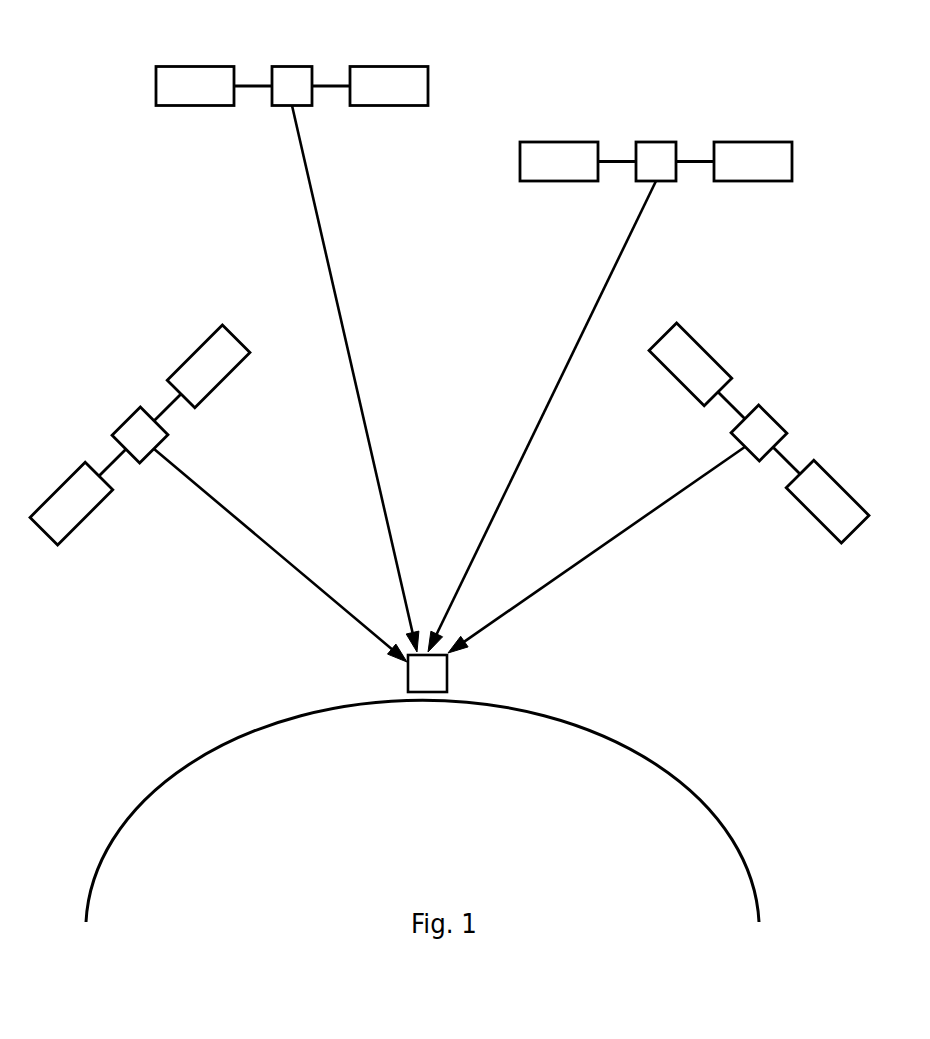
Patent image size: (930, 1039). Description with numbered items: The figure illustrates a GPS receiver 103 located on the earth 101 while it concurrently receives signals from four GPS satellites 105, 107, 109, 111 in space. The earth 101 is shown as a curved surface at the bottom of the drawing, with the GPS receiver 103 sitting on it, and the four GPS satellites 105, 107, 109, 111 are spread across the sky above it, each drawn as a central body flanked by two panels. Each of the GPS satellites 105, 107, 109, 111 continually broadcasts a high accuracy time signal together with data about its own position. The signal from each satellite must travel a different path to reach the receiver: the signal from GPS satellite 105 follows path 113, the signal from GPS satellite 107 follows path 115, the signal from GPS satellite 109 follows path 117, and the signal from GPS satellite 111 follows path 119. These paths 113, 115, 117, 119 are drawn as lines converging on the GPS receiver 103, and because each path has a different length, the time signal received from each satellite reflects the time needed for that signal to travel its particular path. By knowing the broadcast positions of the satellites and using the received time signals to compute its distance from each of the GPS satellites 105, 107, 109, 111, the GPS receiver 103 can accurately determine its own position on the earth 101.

The earth 101 is at (352, 822).
The GPS receiver 103 is at (448, 672).
The GPS satellite 105 is at (165, 437).
The GPS satellite 107 is at (284, 63).
The GPS satellite 109 is at (657, 139).
The GPS satellite 111 is at (758, 407).
The path 113 is at (233, 520).
The path 115 is at (370, 440).
The path 117 is at (522, 460).
The path 119 is at (583, 567).